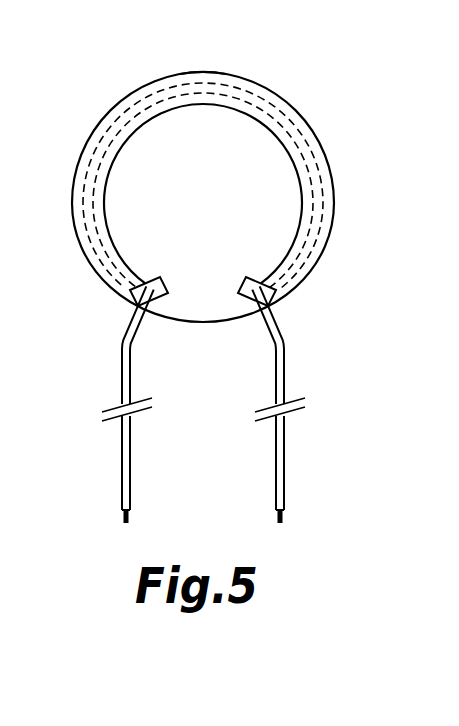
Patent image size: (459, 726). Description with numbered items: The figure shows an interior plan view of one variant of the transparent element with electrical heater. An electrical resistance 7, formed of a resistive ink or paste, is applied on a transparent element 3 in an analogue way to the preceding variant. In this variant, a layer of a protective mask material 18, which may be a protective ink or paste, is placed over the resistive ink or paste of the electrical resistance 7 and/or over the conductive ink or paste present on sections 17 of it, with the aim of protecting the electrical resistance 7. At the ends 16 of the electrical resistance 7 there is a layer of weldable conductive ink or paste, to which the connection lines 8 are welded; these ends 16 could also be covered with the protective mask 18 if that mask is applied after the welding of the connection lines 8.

The transparent element 3 is at (225, 125).
The electrical resistance 7 is at (135, 105).
The connection lines 8 is at (123, 373).
The ends of the electrical resistance 16 is at (152, 300).
The sections 17 is at (327, 140).
The protective mask material 18 is at (187, 77).